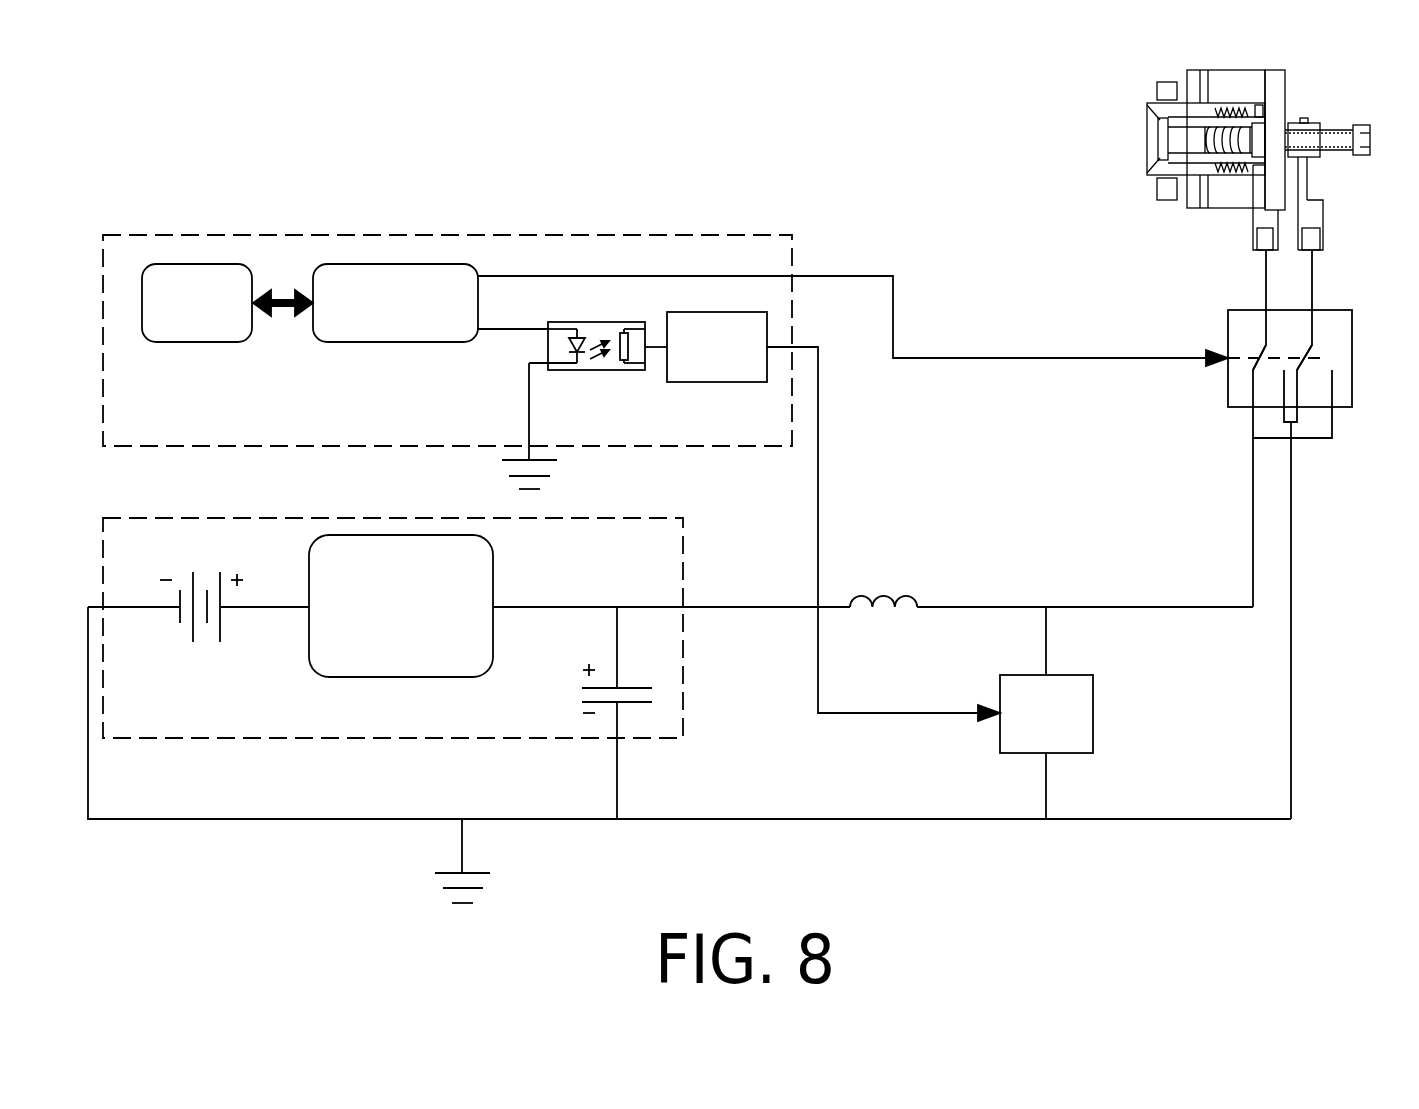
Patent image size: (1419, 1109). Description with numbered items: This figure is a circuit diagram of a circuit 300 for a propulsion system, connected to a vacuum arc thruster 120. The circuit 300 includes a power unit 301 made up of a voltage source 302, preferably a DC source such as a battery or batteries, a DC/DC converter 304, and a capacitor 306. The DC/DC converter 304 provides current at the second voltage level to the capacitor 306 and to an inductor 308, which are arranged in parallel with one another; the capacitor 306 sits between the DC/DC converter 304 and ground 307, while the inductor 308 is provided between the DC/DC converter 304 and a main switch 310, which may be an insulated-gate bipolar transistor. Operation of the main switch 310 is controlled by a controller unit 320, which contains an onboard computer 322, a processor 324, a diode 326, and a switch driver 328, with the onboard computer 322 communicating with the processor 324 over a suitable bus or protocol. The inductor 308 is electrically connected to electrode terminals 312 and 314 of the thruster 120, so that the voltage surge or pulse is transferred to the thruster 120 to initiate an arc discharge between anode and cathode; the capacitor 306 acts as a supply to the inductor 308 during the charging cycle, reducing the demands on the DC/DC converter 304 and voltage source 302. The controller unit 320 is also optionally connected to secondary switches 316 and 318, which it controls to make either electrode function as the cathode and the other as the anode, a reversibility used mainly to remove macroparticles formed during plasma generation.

The vacuum arc thruster 120 is at (1232, 164).
The circuit 300 is at (611, 162).
The power unit 301 is at (155, 518).
The voltage source 302 is at (188, 643).
The DC/DC converter 304 is at (400, 678).
The capacitor 306 is at (637, 688).
The ground 307 is at (447, 897).
The inductor 308 is at (880, 585).
The main switch 310 is at (1093, 713).
The electrode terminal 312 is at (1257, 242).
The electrode terminal 314 is at (1318, 242).
The secondary switch 316 is at (1240, 348).
The secondary switch 318 is at (1310, 358).
The controller unit 320 is at (155, 235).
The onboard computer 322 is at (195, 343).
The processor 324 is at (395, 343).
The diode 326 is at (593, 371).
The switch driver 328 is at (713, 383).